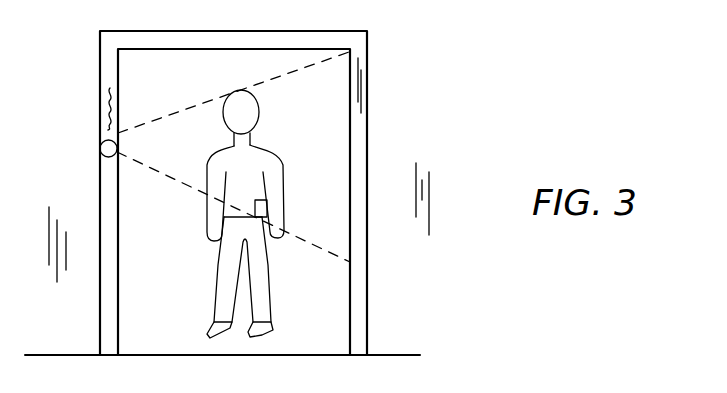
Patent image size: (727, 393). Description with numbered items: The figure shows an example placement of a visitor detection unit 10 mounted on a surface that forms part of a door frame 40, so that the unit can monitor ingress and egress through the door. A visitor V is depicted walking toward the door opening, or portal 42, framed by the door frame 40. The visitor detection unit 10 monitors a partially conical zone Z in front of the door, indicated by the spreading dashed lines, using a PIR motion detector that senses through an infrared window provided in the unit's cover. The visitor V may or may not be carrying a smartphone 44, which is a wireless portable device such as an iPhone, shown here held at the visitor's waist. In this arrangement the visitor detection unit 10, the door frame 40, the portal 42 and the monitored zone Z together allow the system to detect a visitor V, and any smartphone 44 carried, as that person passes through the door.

The visitor detection unit 10 is at (100, 150).
The door frame 40 is at (362, 87).
The door opening 42 is at (175, 89).
The smartphone 44 is at (270, 216).
The visitor V is at (262, 298).
The partially conical zone Z is at (323, 136).